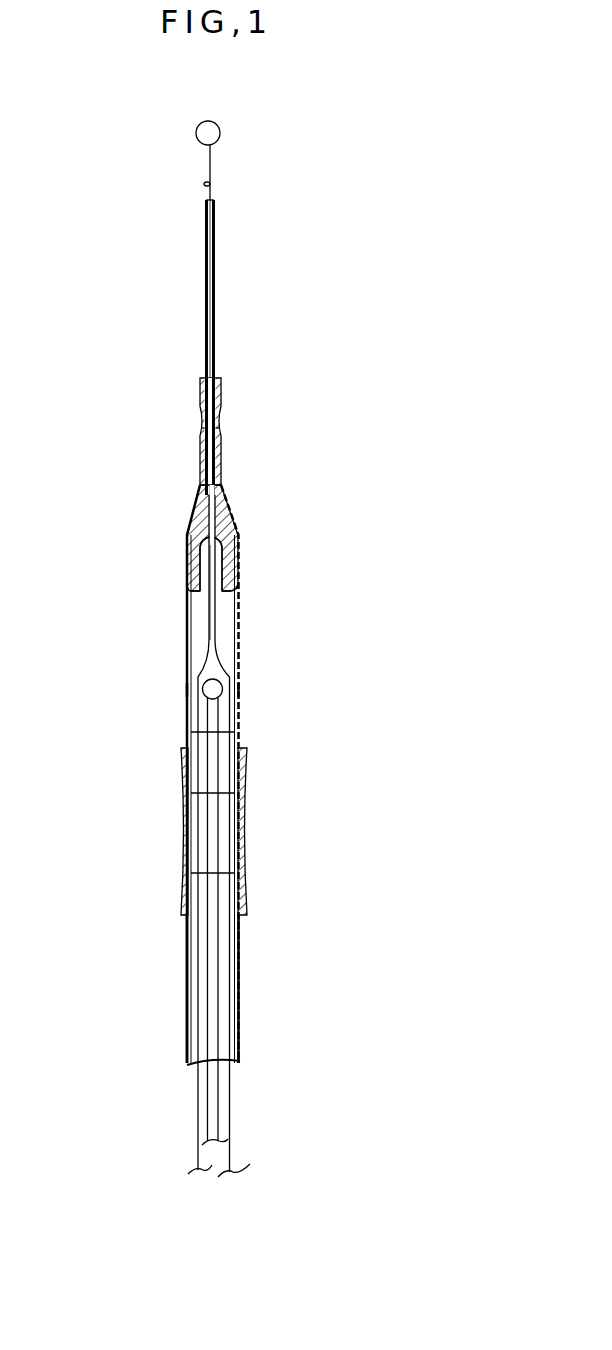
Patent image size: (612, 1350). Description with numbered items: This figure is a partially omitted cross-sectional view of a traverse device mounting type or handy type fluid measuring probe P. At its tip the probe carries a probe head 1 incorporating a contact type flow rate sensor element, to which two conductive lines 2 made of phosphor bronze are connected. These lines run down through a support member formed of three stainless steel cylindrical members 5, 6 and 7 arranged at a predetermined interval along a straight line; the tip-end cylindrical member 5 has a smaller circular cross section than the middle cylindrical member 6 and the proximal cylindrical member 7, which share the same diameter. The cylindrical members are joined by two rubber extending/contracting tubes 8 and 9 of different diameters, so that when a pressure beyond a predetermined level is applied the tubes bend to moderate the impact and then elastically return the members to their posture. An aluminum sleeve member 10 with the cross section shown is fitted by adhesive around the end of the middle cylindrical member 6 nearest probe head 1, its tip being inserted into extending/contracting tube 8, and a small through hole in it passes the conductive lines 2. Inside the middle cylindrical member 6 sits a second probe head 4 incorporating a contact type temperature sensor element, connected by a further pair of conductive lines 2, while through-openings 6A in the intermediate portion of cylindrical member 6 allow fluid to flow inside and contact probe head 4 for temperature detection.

The probe head 1 is at (221, 129).
The conductive lines 2 is at (206, 182).
The probe head 4 is at (222, 693).
The cylindrical member 5 is at (215, 330).
The cylindrical member 6 is at (238, 608).
The through-openings 6A is at (238, 688).
The cylindrical member 7 is at (238, 967).
The extending/contracting tube 8 is at (218, 402).
The extending/contracting tube 9 is at (243, 815).
The sleeve member 10 is at (226, 524).
The fluid measuring probe P is at (407, 468).